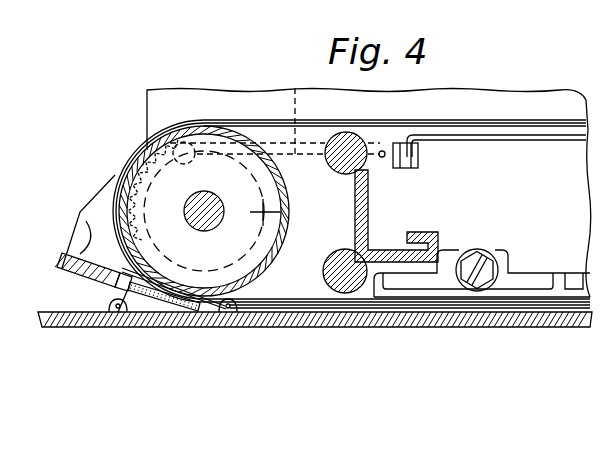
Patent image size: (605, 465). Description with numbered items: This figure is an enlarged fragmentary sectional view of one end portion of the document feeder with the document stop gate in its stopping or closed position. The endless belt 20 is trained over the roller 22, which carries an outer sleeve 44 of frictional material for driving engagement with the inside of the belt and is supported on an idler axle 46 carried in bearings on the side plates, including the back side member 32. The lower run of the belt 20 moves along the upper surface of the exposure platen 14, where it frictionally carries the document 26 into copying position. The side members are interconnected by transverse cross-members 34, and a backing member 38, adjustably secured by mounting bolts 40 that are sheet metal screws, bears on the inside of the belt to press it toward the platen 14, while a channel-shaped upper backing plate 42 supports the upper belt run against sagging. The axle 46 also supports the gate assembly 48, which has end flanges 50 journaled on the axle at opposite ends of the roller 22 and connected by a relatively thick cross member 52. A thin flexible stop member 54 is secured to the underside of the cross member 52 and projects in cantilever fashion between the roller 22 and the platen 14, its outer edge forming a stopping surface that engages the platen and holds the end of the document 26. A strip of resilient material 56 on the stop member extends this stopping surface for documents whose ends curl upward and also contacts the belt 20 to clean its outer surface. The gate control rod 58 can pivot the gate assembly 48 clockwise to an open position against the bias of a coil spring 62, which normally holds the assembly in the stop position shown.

The exposure platen 14 is at (330, 328).
The endless belt 20 is at (480, 119).
The roller 22 is at (248, 213).
The document 26 is at (229, 313).
The back side member 32 is at (205, 97).
The transverse cross-member 34 is at (369, 186).
The backing member 38 is at (513, 299).
The mounting bolt 40 is at (483, 253).
The upper backing plate 42 is at (536, 140).
The outer sleeve 44 is at (141, 150).
The idler axle 46 is at (228, 186).
The gate assembly 48 is at (78, 287).
The end flange 50 is at (100, 205).
The cross member 52 is at (86, 221).
The stop member 54 is at (92, 281).
The strip of resilient material 56 is at (162, 297).
The gate control rod 58 is at (277, 114).
The coil spring 62 is at (130, 168).